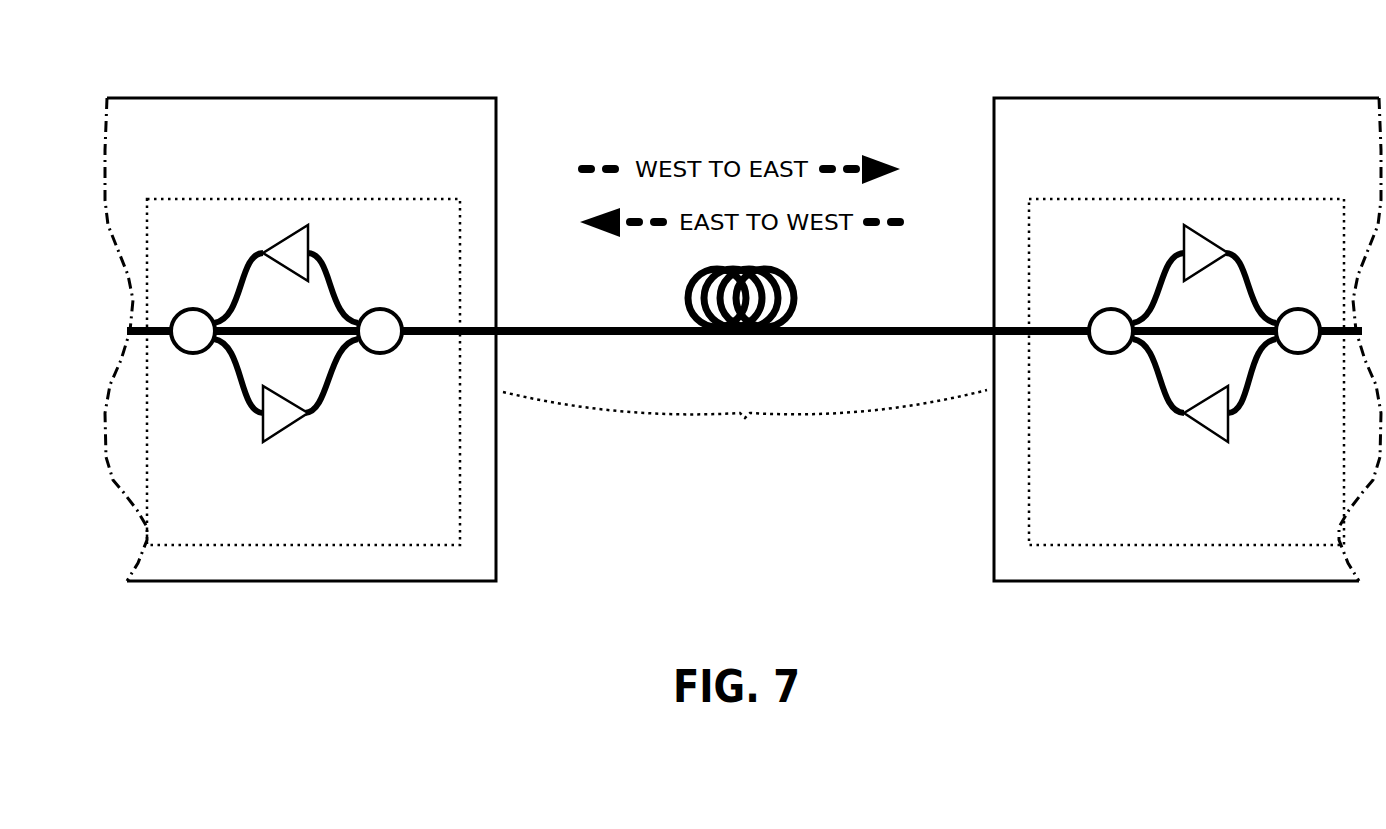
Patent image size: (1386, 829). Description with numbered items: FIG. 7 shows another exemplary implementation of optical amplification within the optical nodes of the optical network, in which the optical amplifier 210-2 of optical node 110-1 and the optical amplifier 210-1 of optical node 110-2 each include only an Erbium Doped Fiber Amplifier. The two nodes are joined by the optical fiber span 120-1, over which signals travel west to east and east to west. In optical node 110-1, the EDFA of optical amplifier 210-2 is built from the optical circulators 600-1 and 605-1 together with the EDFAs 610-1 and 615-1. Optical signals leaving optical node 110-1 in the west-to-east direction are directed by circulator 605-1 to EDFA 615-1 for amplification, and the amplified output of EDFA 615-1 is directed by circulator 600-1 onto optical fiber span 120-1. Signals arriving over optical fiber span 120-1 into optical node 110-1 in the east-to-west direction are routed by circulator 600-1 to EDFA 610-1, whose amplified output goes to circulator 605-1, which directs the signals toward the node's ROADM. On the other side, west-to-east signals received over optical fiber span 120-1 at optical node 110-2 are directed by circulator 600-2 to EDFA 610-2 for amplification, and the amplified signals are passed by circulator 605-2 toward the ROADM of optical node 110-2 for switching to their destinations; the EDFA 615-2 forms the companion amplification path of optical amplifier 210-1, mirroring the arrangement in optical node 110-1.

The optical node 110-1 is at (300, 314).
The optical node 110-2 is at (1190, 314).
The optical amplifier 210-2 is at (290, 346).
The optical amplifier 210-1 is at (1205, 346).
The EDFA 610-1 is at (262, 241).
The EDFA 610-2 is at (1229, 241).
The EDFA 615-1 is at (300, 420).
The EDFA 615-2 is at (1190, 420).
The optical circulator 600-1 is at (417, 313).
The optical circulator 600-2 is at (1078, 313).
The optical circulator 605-1 is at (160, 313).
The optical circulator 605-2 is at (1331, 313).
The optical fiber span 120-1 is at (745, 452).